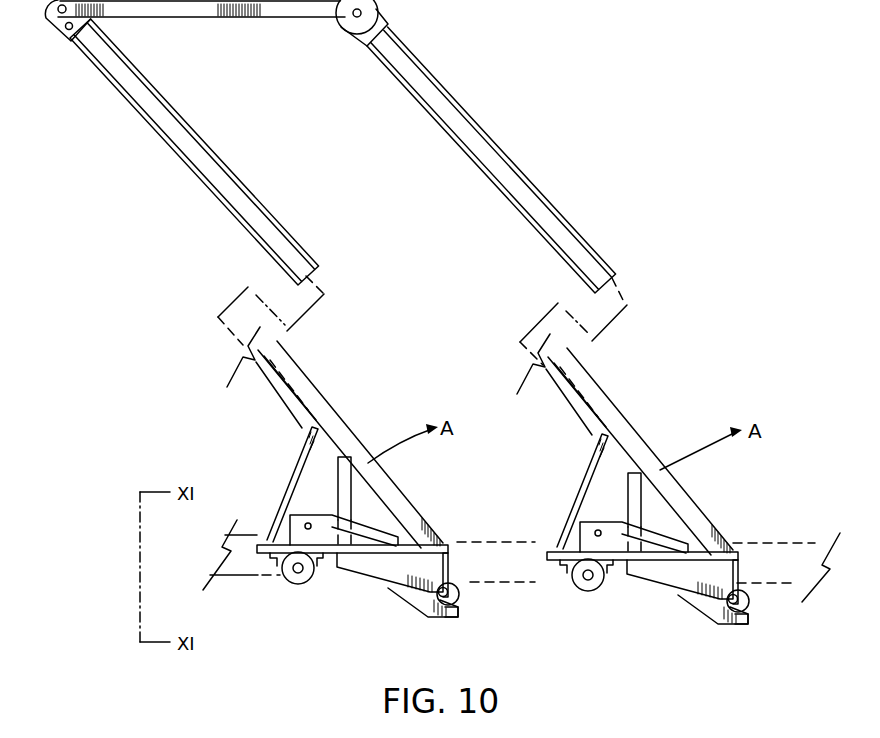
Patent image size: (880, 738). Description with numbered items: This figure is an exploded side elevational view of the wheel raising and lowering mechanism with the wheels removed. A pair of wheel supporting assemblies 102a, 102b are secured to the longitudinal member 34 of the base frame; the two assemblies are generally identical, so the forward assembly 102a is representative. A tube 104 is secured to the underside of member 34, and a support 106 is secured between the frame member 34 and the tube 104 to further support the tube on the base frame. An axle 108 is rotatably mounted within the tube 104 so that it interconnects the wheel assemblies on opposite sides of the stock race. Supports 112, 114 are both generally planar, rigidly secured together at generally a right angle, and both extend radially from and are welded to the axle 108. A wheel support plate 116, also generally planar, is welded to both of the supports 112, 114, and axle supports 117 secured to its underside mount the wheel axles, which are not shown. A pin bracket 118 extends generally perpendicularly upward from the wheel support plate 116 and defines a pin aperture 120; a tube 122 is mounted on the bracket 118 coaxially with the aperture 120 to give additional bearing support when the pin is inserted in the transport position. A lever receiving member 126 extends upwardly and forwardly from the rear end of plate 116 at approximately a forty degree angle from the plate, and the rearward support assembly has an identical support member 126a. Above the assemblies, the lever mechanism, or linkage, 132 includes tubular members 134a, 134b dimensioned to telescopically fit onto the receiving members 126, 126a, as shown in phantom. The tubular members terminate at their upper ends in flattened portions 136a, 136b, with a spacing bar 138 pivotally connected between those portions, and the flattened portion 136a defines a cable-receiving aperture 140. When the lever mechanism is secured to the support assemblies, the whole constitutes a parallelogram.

The longitudinal member 34 is at (570, 596).
The wheel supporting assembly 102a is at (356, 496).
The wheel supporting assembly 102b is at (651, 483).
The tube 104 is at (460, 597).
The support 106 is at (406, 603).
The axle 108 is at (452, 613).
The support 112 is at (449, 562).
The support 114 is at (372, 562).
The wheel support plate 116 is at (262, 555).
The axle support 117 is at (283, 576).
The pin bracket 118 is at (293, 538).
The pin aperture 120 is at (305, 522).
The tube 122 is at (312, 532).
The lever receiving member 126 is at (410, 523).
The support member 126a is at (666, 451).
The lever mechanism 132 is at (342, 146).
The tubular member 134a is at (249, 191).
The arm 134b is at (566, 222).
The flattened portion 136a is at (52, 14).
The hinge bracket 136b is at (355, 28).
The spacing bar 138 is at (206, 19).
The cable-receiving aperture 140 is at (70, 31).